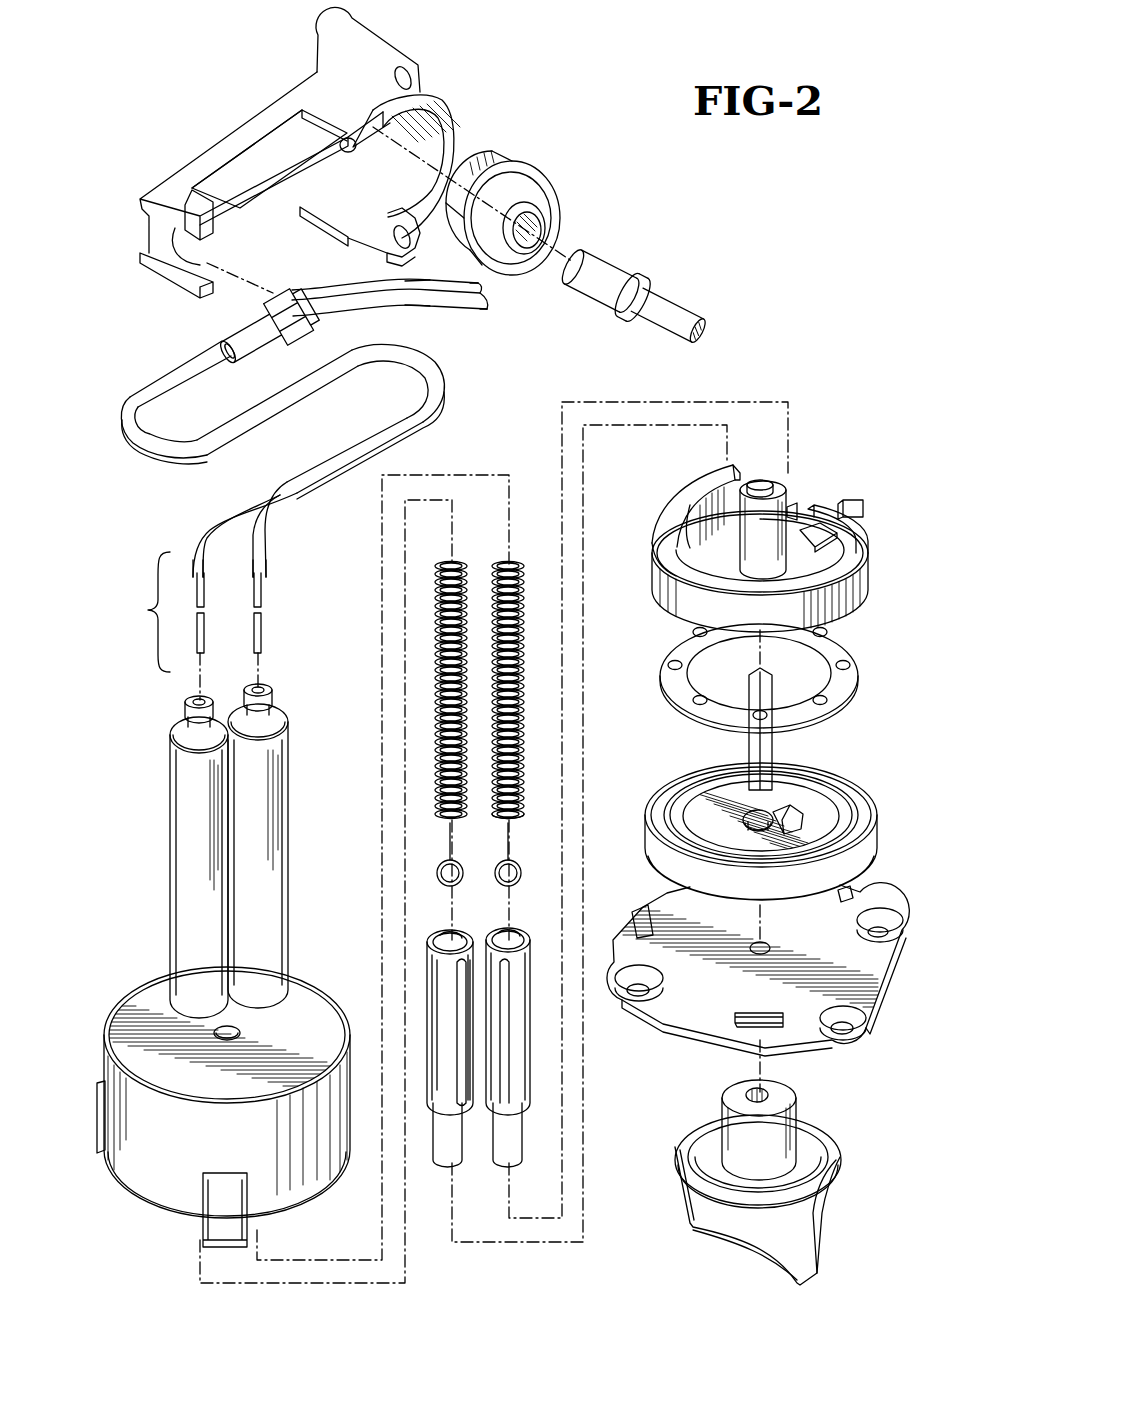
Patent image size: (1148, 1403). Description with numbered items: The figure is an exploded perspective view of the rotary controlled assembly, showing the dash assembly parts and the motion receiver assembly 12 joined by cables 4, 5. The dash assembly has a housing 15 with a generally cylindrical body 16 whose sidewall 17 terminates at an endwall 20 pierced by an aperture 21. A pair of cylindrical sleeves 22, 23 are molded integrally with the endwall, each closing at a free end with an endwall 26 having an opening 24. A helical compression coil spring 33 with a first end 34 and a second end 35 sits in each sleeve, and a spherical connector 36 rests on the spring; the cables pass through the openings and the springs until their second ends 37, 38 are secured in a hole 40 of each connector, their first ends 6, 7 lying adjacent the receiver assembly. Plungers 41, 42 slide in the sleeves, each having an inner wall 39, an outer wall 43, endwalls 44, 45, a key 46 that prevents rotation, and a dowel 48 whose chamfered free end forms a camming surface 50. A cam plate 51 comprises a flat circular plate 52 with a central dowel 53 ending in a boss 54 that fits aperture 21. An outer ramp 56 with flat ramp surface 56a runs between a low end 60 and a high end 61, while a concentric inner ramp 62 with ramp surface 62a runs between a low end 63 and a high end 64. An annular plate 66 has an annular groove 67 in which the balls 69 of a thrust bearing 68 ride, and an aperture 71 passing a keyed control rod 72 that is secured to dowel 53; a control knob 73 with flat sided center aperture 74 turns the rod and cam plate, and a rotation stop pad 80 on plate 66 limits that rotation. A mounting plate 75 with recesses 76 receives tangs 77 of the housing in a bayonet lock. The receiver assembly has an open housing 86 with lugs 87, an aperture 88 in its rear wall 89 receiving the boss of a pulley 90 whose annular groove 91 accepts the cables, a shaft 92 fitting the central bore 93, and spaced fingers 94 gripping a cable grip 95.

The cable 4 is at (417, 310).
The cable 5 is at (410, 280).
The first end 6 is at (494, 328).
The first end 7 is at (488, 303).
The motion receiver assembly 12 is at (455, 108).
The housing 15 is at (132, 986).
The body 16 is at (160, 1168).
The sidewall 17 is at (182, 1195).
The endwall 20 is at (305, 995).
The aperture 21 is at (236, 1030).
The cylindrical sleeve 22 is at (262, 845).
The cylindrical sleeve 23 is at (185, 827).
The opening 24 is at (197, 700).
The endwall 26 is at (180, 732).
The helical compression coil spring 33 is at (462, 566).
The first end 34 is at (520, 565).
The second end 35 is at (518, 822).
The spherical connector 36 is at (505, 884).
The second end 37 is at (262, 582).
The second end 38 is at (205, 590).
The inner wall 39 is at (515, 945).
The hole 40 is at (505, 862).
The plunger 41 is at (530, 1080).
The plunger 42 is at (475, 1040).
The outer wall 43 is at (440, 980).
The endwall 44 is at (430, 940).
The endwall 45 is at (530, 1100).
The key 46 is at (508, 1015).
The dowel 48 is at (452, 1150).
The camming surface 50 is at (500, 1152).
The cam plate 51 is at (818, 500).
The flat circular plate 52 is at (828, 545).
The dowel 53 is at (745, 540).
The boss 54 is at (760, 483).
The outer ramp 56 is at (845, 590).
The ramp surface 56a is at (665, 540).
The low end 60 is at (792, 502).
The high end 61 is at (857, 505).
The inner ramp 62 is at (688, 485).
The ramp surface 62a is at (688, 507).
The low end 63 is at (822, 526).
The high end 64 is at (722, 470).
The annular plate 66 is at (657, 792).
The annular groove 67 is at (845, 818).
The thrust bearing 68 is at (840, 650).
The balls 69 is at (670, 663).
The aperture 71 is at (752, 815).
The control rod 72 is at (772, 745).
The control knob 73 is at (737, 1237).
The center aperture 74 is at (762, 1094).
The mounting plate 75 is at (690, 1030).
The mounting recess 76 is at (755, 1015).
The tang 77 is at (98, 1160).
The rotation stop pad 80 is at (795, 810).
The open housing 86 is at (262, 102).
The lug 87 is at (385, 38).
The aperture 88 is at (345, 152).
The rear wall 89 is at (233, 177).
The pulley 90 is at (522, 170).
The annular groove 91 is at (482, 172).
The shaft 92 is at (606, 262).
The central bore 93 is at (546, 232).
The finger 94 is at (197, 220).
The cable grip 95 is at (234, 330).